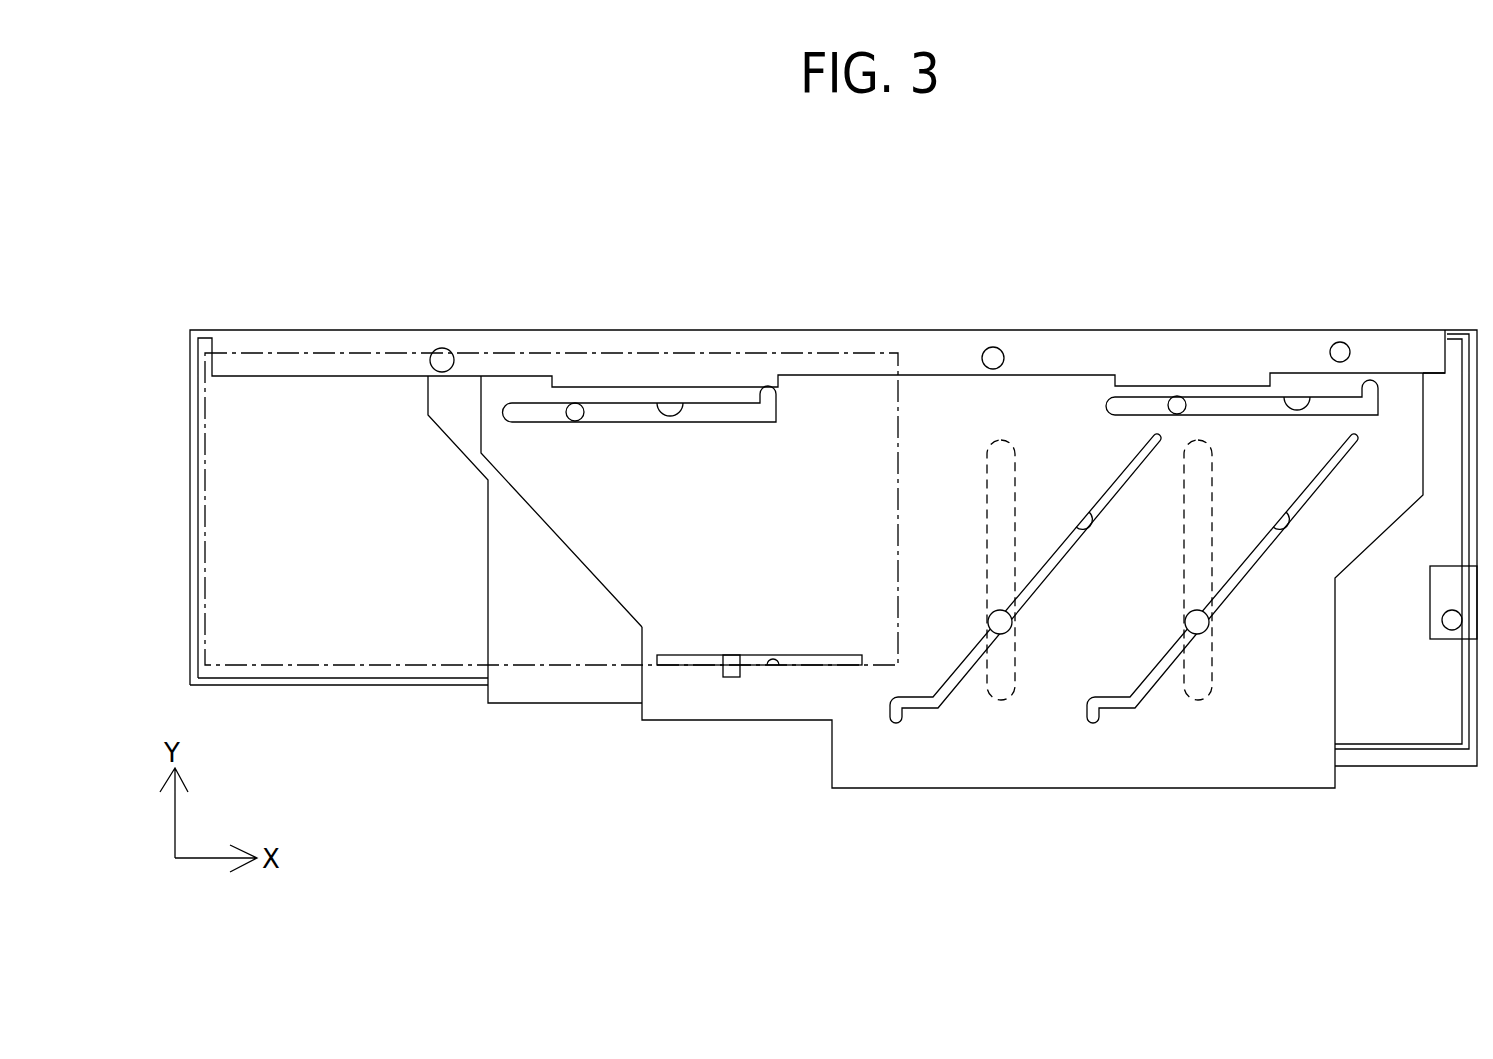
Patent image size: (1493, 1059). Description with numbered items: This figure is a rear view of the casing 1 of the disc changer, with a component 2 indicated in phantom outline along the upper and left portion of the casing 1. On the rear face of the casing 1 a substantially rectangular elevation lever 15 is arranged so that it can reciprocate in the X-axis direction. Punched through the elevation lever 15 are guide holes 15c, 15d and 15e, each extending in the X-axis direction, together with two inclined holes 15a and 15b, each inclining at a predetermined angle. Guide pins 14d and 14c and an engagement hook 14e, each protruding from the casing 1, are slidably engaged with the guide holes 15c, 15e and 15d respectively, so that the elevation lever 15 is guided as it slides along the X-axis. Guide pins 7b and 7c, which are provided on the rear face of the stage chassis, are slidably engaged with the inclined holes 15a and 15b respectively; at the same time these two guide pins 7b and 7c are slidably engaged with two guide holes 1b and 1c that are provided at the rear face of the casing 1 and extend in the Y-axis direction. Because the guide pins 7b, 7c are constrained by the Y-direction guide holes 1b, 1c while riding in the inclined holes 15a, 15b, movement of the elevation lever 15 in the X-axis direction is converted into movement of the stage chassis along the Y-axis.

The casing 1 is at (907, 330).
The disc cartridge 2 is at (386, 353).
The elevation lever 15 is at (1097, 763).
The inclined hole 15a is at (1086, 515).
The inclined hole 15b is at (1283, 512).
The guide hole 15c is at (684, 403).
The guide hole 15d is at (776, 668).
The guide hole 15e is at (1304, 400).
The guide pin 14c is at (1177, 396).
The guide pin 14d is at (575, 403).
The engagement hook 14e is at (732, 677).
The guide pin 7b is at (998, 634).
The guide pin 7c is at (1208, 630).
The guide hole 1b is at (1003, 700).
The guide hole 1c is at (1200, 700).